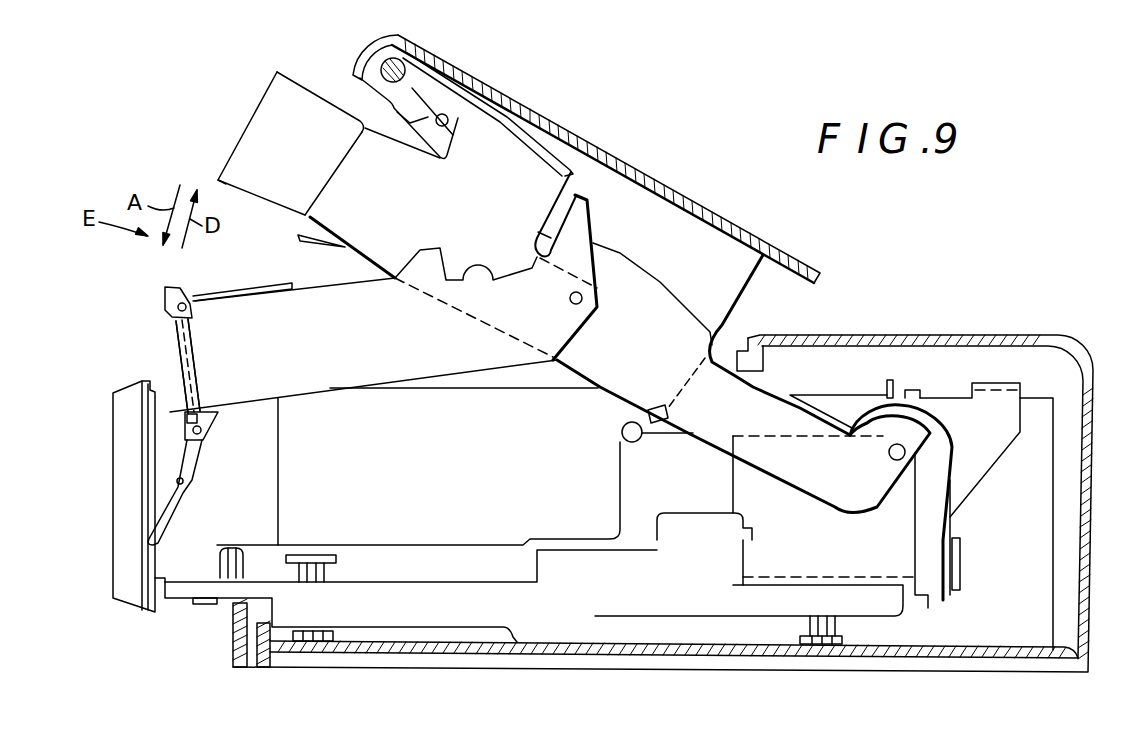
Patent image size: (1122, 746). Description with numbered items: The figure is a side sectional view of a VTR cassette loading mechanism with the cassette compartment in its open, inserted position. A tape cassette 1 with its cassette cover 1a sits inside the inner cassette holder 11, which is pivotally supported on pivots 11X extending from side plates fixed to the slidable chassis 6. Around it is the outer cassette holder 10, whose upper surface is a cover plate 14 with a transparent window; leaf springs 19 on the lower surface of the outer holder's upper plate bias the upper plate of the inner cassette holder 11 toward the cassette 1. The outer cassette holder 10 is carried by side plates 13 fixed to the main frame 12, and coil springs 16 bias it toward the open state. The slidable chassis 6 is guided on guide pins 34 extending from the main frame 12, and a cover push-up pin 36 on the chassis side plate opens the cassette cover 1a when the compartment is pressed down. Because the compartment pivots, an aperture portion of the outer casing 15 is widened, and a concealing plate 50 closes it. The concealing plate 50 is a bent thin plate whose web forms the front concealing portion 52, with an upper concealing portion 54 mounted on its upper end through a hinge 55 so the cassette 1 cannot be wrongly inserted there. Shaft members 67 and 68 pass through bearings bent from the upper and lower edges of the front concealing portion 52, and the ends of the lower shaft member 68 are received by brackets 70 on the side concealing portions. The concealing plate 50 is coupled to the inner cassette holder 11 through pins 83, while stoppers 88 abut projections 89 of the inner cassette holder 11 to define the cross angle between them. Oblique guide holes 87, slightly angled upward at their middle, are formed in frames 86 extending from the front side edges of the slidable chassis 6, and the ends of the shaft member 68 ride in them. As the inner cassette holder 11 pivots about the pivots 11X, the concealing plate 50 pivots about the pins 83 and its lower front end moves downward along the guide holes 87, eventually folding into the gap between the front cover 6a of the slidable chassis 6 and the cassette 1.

The tape cassette 1 is at (268, 92).
The cassette cover 1a is at (216, 179).
The inner cassette holder 11 is at (333, 162).
The leaf springs 19 is at (523, 110).
The cover plate 14 is at (568, 137).
The projections 89 is at (574, 185).
The stoppers 88 is at (584, 216).
The pins 83 is at (581, 294).
The outer cassette holder 10 is at (758, 266).
The outer casing 15 is at (848, 334).
The pivots 11X is at (898, 444).
The side plates 13 is at (996, 438).
The coil springs 16 is at (951, 527).
The cover push-up pin 36 is at (632, 422).
The front concealing portion 52 is at (177, 361).
The concealing plate 50 is at (200, 338).
The upper concealing portion 54 is at (232, 292).
The hinge 55 is at (168, 289).
The shaft member 67 is at (195, 308).
The brackets 70 is at (212, 417).
The shaft member 68 is at (210, 436).
The front cover 6a is at (125, 411).
The oblique guide holes 87 is at (176, 480).
The frames 86 is at (166, 567).
The guide pins 34 is at (312, 555).
The slidable chassis 6 is at (372, 580).
The main frame 12 is at (462, 641).